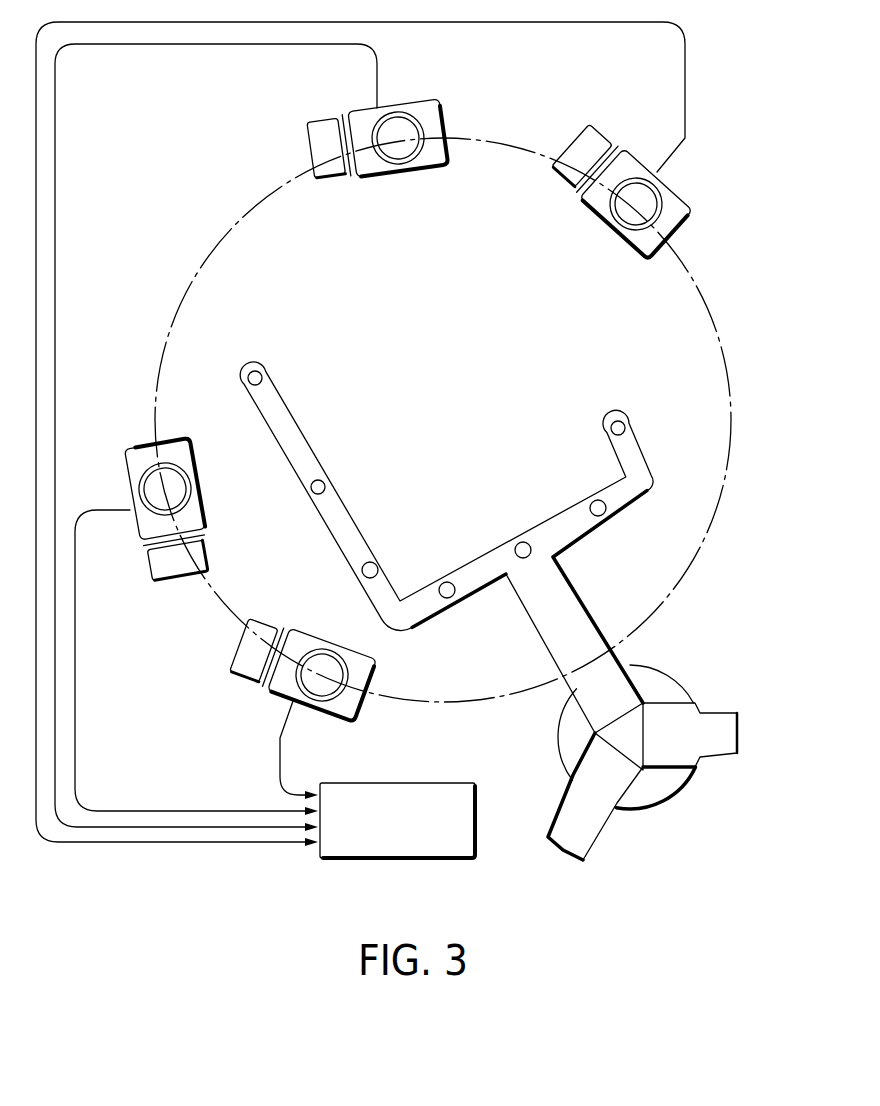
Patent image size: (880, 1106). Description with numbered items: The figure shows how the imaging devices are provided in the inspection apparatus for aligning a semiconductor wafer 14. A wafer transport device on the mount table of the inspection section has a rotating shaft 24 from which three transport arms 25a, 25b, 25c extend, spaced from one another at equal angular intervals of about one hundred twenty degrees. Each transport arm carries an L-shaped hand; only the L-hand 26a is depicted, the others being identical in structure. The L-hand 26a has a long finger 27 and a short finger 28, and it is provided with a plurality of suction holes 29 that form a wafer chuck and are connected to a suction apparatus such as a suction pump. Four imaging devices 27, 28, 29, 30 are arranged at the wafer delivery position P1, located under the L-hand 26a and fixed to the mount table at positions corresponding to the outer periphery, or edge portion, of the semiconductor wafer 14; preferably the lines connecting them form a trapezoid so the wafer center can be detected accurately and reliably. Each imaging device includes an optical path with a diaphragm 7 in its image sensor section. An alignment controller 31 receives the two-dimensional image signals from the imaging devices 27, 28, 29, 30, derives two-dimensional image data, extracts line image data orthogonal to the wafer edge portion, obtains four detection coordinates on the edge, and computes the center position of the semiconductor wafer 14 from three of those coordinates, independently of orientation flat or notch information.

The diaphragm 7 is at (398, 137).
The semiconductor wafer 14 is at (728, 362).
The rotating shaft 24 is at (677, 673).
The transport arm 25a is at (570, 610).
The transport arm 25b is at (587, 833).
The transport arm 25c is at (707, 747).
The L-hand 26a is at (266, 455).
The long finger 27 is at (436, 95).
The short finger 28 is at (677, 193).
The suction holes 29 is at (133, 448).
The imaging device 30 is at (275, 693).
The alignment controller 31 is at (392, 862).
The wafer delivery position P1 is at (724, 277).